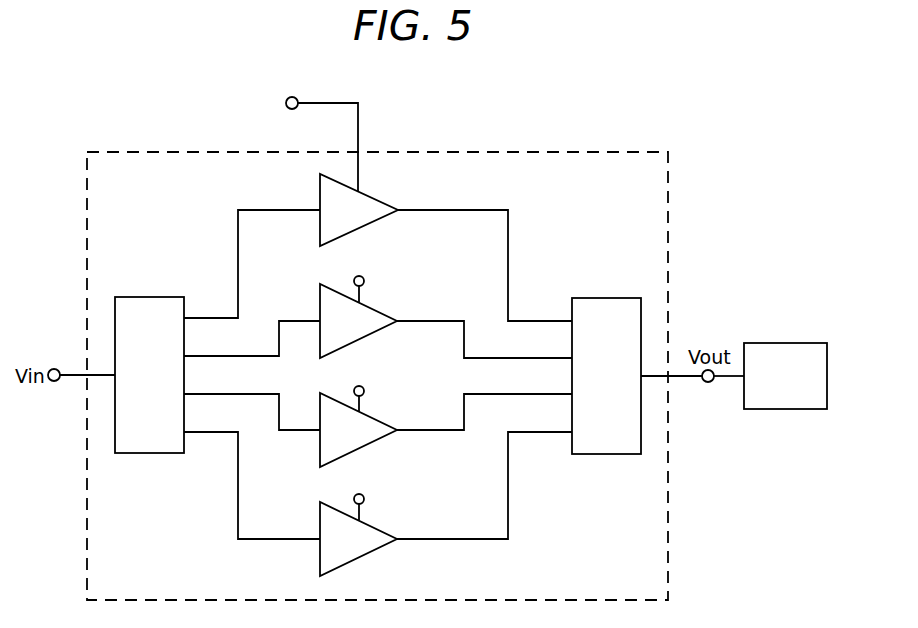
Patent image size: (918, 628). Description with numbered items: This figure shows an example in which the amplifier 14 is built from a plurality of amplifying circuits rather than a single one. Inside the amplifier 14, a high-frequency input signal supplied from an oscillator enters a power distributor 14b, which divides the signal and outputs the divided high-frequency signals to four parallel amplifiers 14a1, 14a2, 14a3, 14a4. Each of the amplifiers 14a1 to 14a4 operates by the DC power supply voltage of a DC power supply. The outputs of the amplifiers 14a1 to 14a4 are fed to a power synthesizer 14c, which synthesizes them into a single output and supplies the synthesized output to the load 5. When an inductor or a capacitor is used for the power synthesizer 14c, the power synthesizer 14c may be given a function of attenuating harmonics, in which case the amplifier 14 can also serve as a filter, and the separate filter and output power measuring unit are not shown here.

The amplifier 14 is at (533, 140).
The amplifier 14a1 is at (368, 203).
The amplifier 14a2 is at (372, 317).
The amplifier 14a3 is at (372, 428).
The amplifier 14a4 is at (372, 538).
The power distributor 14b is at (148, 453).
The power synthesizer 14c is at (607, 454).
The load 5 is at (786, 343).